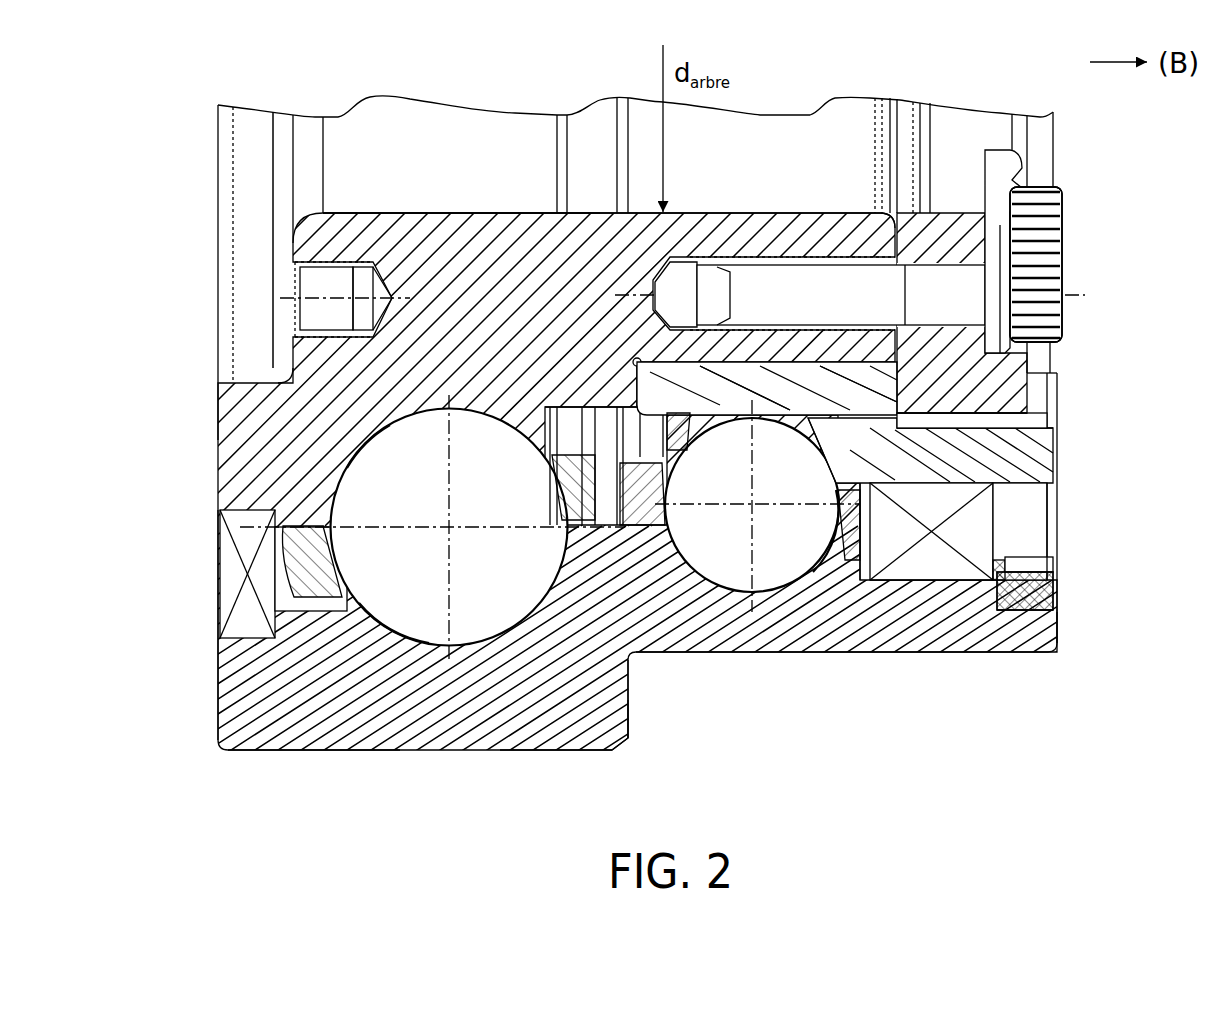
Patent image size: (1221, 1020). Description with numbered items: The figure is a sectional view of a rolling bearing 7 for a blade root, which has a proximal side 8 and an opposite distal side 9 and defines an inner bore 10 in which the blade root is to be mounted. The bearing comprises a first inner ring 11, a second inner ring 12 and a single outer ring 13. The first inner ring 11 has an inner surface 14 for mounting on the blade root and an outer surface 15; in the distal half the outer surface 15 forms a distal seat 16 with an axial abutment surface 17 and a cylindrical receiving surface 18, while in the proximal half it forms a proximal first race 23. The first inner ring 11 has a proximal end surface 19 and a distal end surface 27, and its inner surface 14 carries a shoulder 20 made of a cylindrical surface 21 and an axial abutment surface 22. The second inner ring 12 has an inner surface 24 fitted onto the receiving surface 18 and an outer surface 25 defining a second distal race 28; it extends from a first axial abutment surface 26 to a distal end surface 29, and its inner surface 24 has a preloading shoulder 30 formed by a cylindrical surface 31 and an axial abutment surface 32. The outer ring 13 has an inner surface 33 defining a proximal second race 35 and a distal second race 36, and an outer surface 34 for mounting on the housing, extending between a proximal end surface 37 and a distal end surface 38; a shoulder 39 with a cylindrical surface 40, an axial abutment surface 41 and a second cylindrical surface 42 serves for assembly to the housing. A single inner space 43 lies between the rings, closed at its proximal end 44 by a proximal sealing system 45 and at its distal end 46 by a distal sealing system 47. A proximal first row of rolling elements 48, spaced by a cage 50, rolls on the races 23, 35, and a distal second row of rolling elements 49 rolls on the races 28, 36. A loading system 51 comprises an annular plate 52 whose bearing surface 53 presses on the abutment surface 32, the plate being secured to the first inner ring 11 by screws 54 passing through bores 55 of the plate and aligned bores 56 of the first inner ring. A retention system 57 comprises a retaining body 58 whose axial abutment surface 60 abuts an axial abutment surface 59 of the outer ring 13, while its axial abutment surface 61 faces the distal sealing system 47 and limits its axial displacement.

The rolling bearing 7 is at (1108, 250).
The proximal side 8 is at (218, 455).
The distal side 9 is at (1060, 375).
The inner bore 10 is at (735, 153).
The first inner ring 11 is at (503, 240).
The second inner ring 12 is at (1030, 452).
The outer ring 13 is at (1024, 646).
The inner surface 14 is at (418, 213).
The outer surface 15 is at (607, 372).
The distal seat 16 is at (638, 352).
The axial abutment surface 17 is at (628, 362).
The cylindrical receiving surface 18 is at (705, 362).
The proximal end surface 19 is at (218, 412).
The shoulder 20 is at (275, 345).
The cylindrical surface 21 is at (246, 380).
The axial abutment surface 22 is at (293, 240).
The proximal first race 23 is at (370, 432).
The inner surface 24 is at (747, 364).
The outer surface 25 is at (856, 482).
The first axial abutment surface 26 is at (640, 383).
The distal end surface 27 is at (880, 230).
The second distal race 28 is at (820, 452).
The distal end surface 29 is at (1055, 465).
The shoulder 30 is at (927, 411).
The cylindrical surface 31 is at (1032, 425).
The axial abutment surface 32 is at (888, 382).
The inner surface 33 is at (600, 527).
The outer surface 34 is at (598, 762).
The proximal second race 35 is at (522, 627).
The distal second race 36 is at (700, 578).
The proximal end surface 37 is at (218, 695).
The distal end surface 38 is at (1058, 625).
The shoulder 39 is at (638, 728).
The cylindrical surface 40 is at (775, 654).
The axial abutment surface 41 is at (630, 688).
The second cylindrical surface 42 is at (264, 752).
The single inner space 43 is at (593, 480).
The proximal end 44 is at (218, 600).
The proximal sealing system 45 is at (237, 577).
The distal end 46 is at (1058, 510).
The distal sealing system 47 is at (920, 582).
The proximal first row of rolling elements 48 is at (407, 647).
The distal second row of rolling elements 49 is at (796, 592).
The cage 50 is at (320, 583).
The loading system 51 is at (1068, 182).
The annular plate 52 is at (932, 237).
The bearing surface 53 is at (930, 190).
The screws 54 is at (967, 283).
The bores 55 is at (957, 247).
The bores 56 is at (785, 262).
The retention system 57 is at (1062, 590).
The retaining body 58 is at (1050, 597).
The axial abutment surface 59 is at (985, 640).
The axial abutment surface 60 is at (1022, 638).
The axial abutment surface 61 is at (1006, 572).